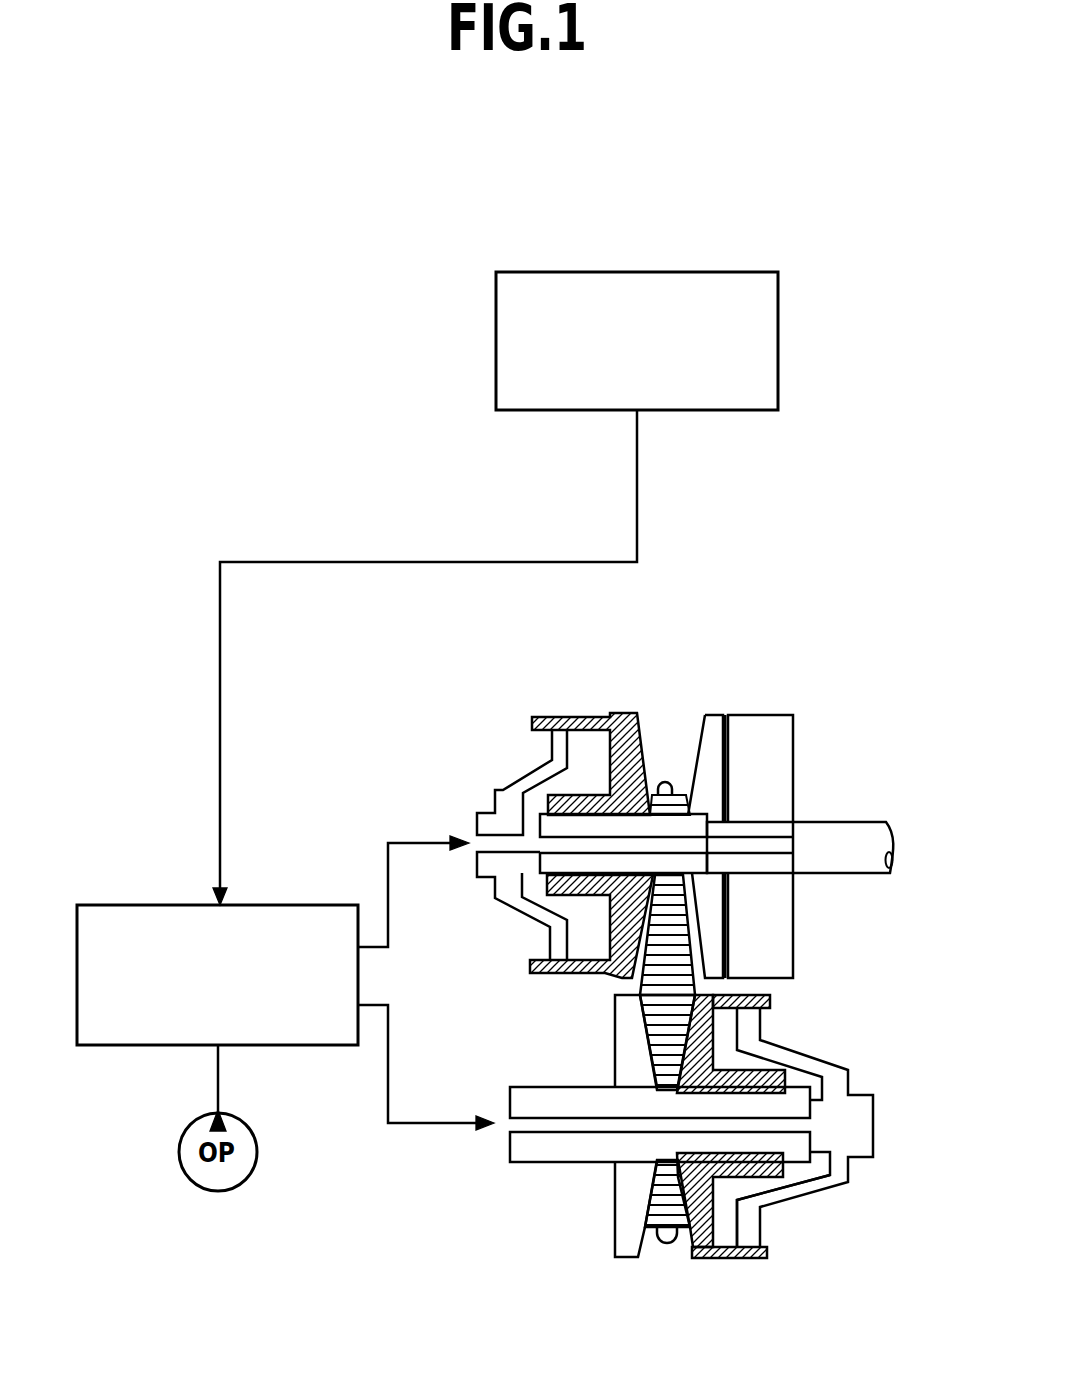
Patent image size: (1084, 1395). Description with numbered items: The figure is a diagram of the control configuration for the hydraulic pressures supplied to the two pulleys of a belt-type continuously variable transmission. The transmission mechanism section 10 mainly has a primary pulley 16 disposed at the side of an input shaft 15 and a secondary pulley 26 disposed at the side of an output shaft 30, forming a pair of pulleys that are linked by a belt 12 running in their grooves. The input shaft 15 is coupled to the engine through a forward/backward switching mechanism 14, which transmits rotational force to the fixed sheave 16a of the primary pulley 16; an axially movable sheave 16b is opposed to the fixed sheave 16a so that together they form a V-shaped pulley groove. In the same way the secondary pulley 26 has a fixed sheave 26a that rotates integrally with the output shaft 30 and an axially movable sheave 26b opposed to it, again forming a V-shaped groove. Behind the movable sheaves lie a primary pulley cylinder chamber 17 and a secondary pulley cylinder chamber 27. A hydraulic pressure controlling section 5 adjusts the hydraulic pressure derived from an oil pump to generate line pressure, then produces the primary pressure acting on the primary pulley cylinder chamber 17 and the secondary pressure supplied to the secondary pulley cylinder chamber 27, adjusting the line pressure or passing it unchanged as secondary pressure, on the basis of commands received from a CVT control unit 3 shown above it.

The CVT control unit 3 is at (722, 272).
The hydraulic pressure controlling section 5 is at (308, 1047).
The transmission mechanism section 10 is at (860, 1208).
The belt 12 is at (687, 953).
The forward/backward switching mechanism 14 is at (767, 713).
The input shaft 15 is at (845, 822).
The primary pulley 16 is at (470, 725).
The fixed sheave 16a is at (717, 713).
The movable sheave 16b is at (633, 713).
The primary pulley cylinder chamber 17 is at (585, 762).
The secondary pulley 26 is at (550, 1215).
The fixed sheave 26a is at (615, 1032).
The movable sheave 26b is at (705, 1042).
The secondary pulley cylinder chamber 27 is at (728, 1222).
The output shaft 30 is at (557, 1162).